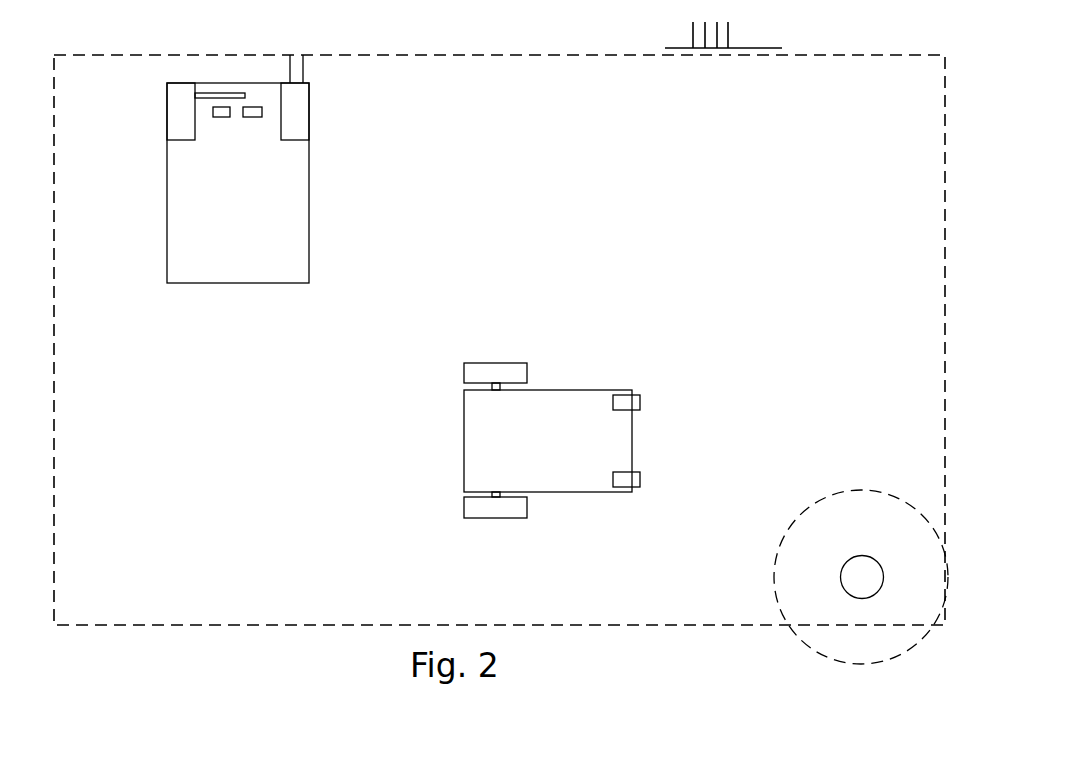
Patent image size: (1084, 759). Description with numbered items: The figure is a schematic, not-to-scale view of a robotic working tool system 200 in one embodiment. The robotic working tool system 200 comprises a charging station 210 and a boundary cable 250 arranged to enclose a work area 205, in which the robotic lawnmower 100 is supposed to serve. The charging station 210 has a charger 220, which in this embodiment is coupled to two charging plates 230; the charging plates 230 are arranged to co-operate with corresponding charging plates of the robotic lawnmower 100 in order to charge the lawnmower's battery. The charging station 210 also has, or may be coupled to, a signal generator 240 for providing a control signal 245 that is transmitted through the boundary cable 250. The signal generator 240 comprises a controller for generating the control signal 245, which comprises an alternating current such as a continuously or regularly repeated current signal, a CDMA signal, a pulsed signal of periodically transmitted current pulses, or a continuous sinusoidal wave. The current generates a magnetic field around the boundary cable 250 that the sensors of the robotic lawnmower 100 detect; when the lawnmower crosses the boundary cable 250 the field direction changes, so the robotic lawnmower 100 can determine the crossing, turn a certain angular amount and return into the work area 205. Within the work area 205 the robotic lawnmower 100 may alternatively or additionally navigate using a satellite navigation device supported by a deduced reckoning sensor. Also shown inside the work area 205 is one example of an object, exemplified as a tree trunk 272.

The robotic lawnmower 100 is at (530, 492).
The robotic working tool system 200 is at (167, 80).
The work area 205 is at (578, 298).
The charging station 210 is at (167, 143).
The charger 220 is at (178, 92).
The charging plates 230 is at (222, 107).
The signal generator 240 is at (310, 123).
The control signal 245 is at (723, 35).
The boundary cable 250 is at (145, 625).
The tree trunk 272 is at (860, 577).